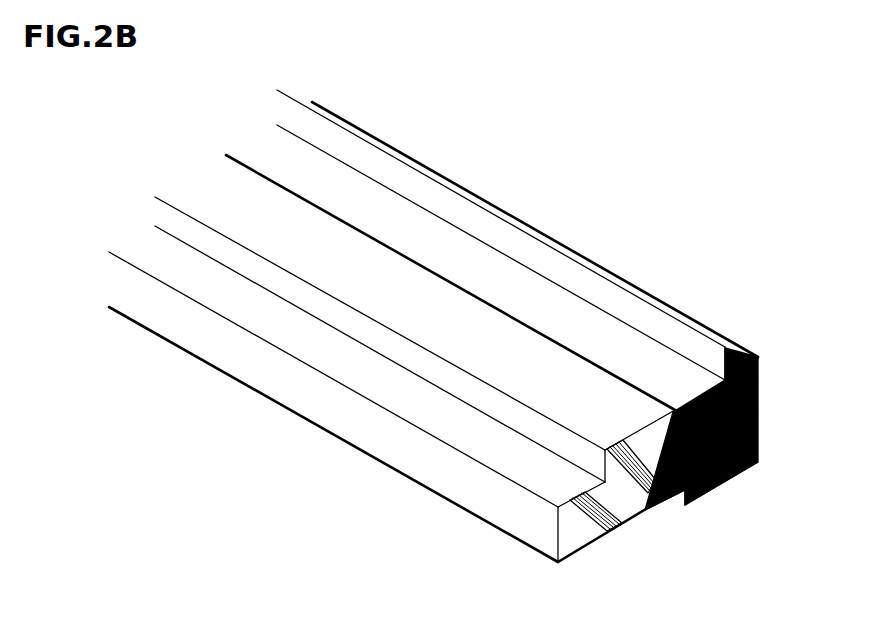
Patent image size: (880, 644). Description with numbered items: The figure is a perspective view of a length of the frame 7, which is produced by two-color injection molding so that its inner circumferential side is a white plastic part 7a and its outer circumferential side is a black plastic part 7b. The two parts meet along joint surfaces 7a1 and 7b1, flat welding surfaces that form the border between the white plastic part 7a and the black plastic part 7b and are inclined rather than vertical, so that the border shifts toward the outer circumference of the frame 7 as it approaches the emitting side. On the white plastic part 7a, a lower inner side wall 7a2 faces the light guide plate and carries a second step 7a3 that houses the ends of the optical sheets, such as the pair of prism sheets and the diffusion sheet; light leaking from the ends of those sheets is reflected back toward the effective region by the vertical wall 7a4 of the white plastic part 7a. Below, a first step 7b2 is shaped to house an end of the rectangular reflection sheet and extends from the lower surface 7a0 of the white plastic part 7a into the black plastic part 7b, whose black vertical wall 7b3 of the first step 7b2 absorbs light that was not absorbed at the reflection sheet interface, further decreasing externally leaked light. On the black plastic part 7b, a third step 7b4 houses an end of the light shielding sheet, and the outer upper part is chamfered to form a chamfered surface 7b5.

The frame 7 is at (637, 228).
The white plastic part 7a is at (620, 512).
The lower surface 7a0 is at (592, 548).
The joint surface 7a1 is at (642, 495).
The lower inner side wall 7a2 is at (538, 525).
The second step 7a3 is at (485, 440).
The vertical wall 7a4 is at (570, 448).
The black plastic part 7b is at (759, 396).
The joint surface 7b1 is at (670, 424).
The first step 7b2 is at (657, 492).
The vertical wall 7b3 is at (677, 495).
The third step 7b4 is at (683, 340).
The chamfered surface 7b5 is at (723, 340).